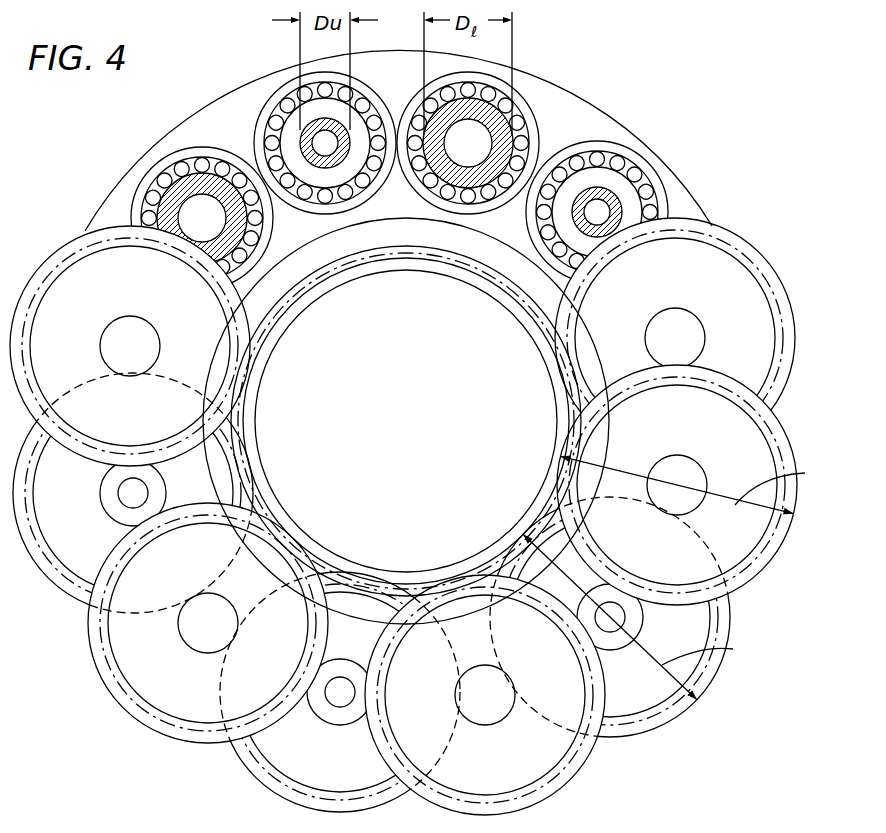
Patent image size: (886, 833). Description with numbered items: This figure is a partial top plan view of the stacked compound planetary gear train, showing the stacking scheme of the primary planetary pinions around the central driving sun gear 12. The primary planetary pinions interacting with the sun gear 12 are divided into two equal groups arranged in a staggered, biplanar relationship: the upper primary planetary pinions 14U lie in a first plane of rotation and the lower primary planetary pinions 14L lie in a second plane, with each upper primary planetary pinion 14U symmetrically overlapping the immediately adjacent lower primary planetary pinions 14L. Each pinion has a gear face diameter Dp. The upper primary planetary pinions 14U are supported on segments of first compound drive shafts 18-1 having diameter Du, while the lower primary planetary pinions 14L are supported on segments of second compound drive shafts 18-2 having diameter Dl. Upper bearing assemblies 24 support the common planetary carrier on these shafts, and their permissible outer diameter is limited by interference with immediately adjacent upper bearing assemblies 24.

The driving sun gear 12 is at (507, 243).
The upper primary planetary pinions 14U is at (748, 582).
The lower primary planetary pinions 14L is at (708, 687).
The first compound drive shafts 18-1 is at (293, 140).
The second compound drive shafts 18-2 is at (518, 137).
The upper bearing assemblies 24 is at (253, 118).